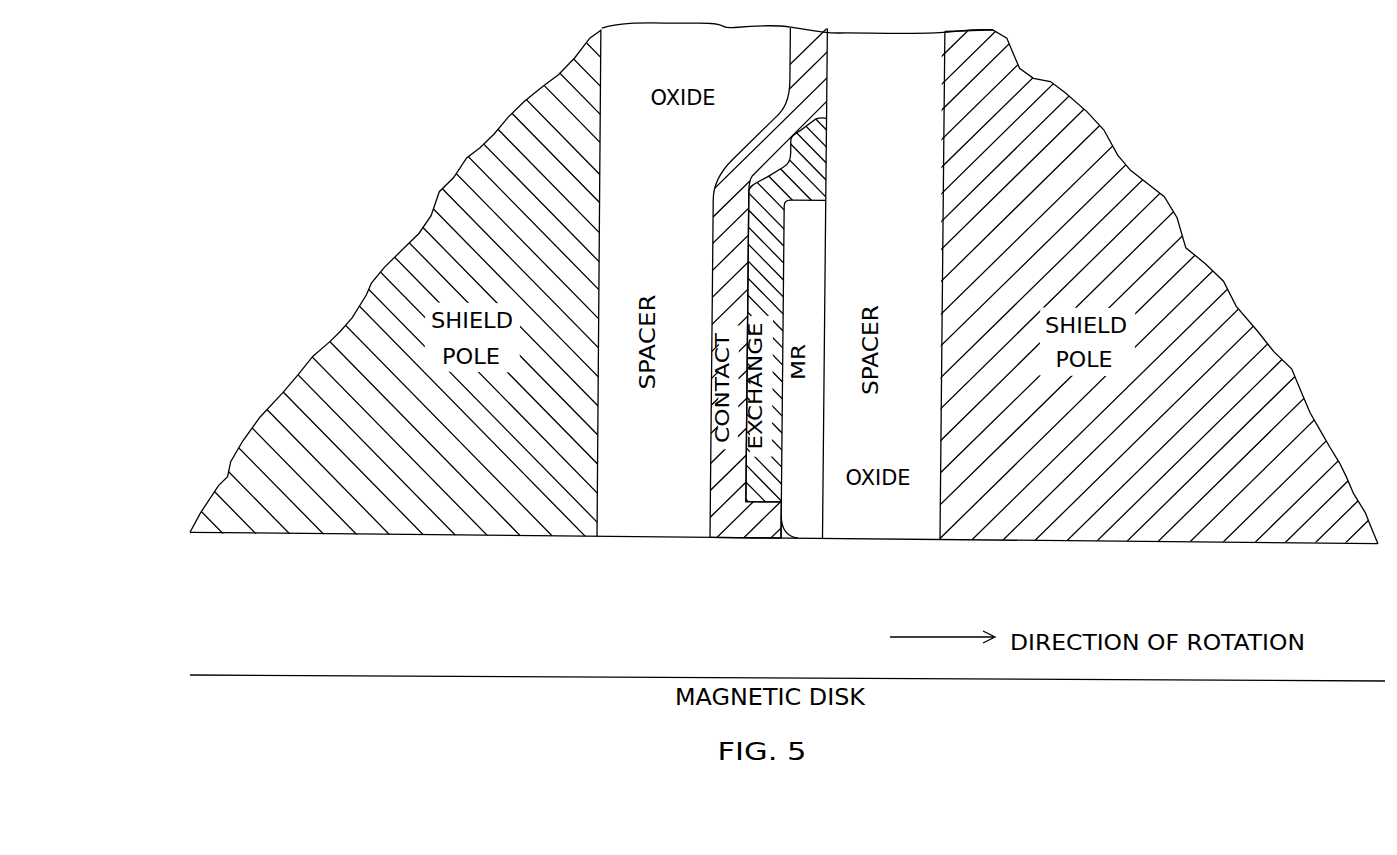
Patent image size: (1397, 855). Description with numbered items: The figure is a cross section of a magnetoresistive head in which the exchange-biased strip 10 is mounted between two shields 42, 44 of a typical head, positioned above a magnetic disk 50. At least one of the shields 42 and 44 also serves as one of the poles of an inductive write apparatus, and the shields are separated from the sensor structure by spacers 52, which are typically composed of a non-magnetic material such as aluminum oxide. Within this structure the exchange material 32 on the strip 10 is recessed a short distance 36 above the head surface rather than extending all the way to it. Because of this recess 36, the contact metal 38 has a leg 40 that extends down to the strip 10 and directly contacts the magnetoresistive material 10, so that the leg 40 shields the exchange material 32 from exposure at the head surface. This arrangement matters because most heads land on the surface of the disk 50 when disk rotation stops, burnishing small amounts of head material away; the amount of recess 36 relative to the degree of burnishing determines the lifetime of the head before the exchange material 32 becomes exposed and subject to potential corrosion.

The exchange-biased strip 10 is at (808, 437).
The exchange material 32 is at (819, 166).
The recess 36 is at (787, 522).
The contact metal 38 is at (712, 457).
The leg 40 is at (747, 528).
The shield 42 is at (397, 518).
The shield 44 is at (1128, 526).
The magnetic disk 50 is at (447, 675).
The spacer 52 is at (922, 252).